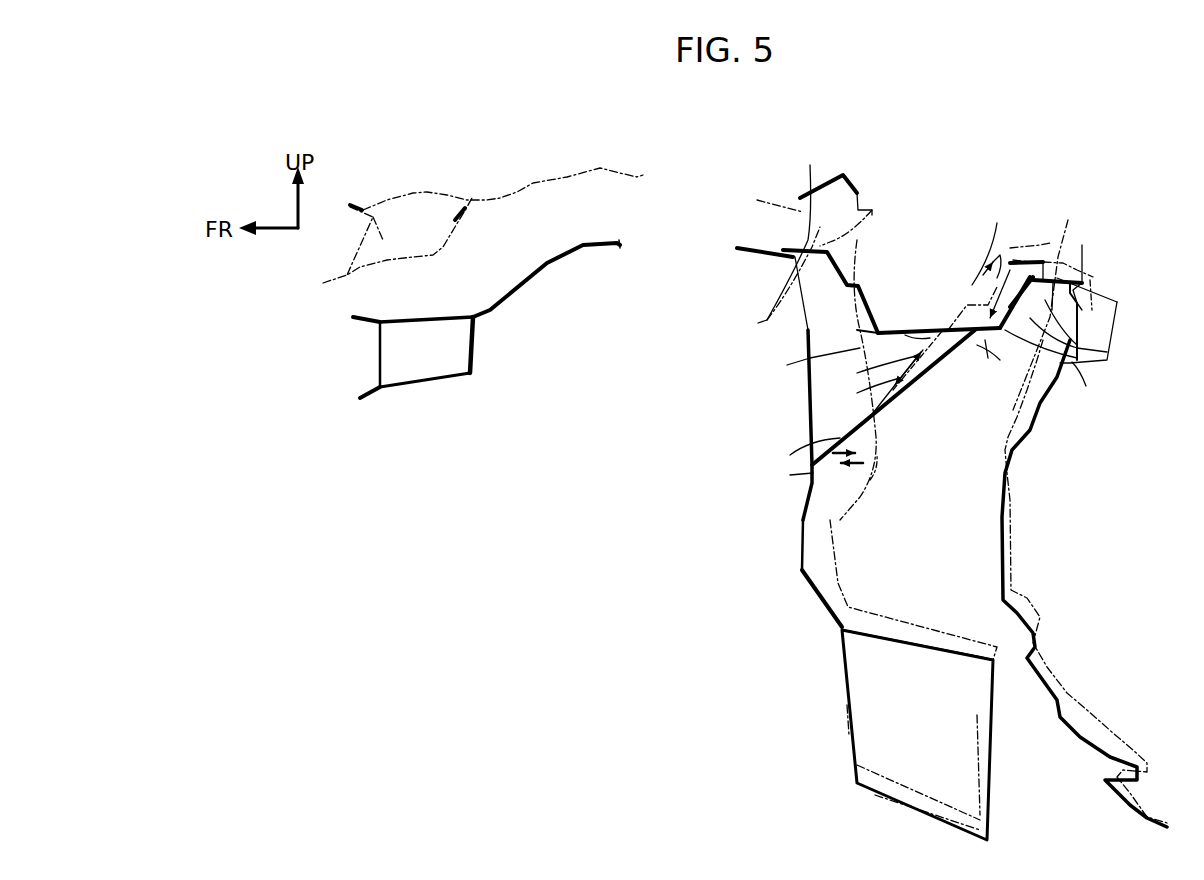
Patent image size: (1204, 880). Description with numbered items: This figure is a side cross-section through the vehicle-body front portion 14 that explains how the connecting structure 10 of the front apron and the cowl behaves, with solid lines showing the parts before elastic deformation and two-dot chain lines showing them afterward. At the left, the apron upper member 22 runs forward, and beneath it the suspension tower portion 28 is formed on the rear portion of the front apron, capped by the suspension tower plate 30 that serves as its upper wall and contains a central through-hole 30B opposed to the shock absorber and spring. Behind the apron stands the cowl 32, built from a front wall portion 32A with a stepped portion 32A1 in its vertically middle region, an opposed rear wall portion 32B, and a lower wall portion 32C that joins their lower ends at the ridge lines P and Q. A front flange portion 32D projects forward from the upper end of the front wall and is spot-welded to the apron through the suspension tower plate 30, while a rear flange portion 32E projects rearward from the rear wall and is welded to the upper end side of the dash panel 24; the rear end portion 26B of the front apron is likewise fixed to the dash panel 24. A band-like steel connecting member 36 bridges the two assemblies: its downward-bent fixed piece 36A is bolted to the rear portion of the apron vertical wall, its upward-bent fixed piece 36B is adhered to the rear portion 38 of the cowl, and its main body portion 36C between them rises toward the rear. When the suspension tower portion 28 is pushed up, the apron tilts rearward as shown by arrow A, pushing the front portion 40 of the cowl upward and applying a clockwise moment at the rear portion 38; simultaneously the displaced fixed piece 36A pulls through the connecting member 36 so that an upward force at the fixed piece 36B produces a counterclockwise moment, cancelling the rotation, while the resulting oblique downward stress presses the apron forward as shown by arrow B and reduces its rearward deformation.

The connecting structure 10 is at (956, 447).
The vehicle-body front portion 14 is at (386, 518).
The apron upper member 22 is at (425, 317).
The dash panel 24 is at (843, 678).
The rear end portion of front apron 26B is at (833, 550).
The suspension tower portion 28 is at (865, 410).
The suspension tower plate 30 is at (546, 258).
The through-hole 30B is at (620, 245).
The cowl 32 is at (884, 312).
The front wall portion 32A is at (865, 293).
The stepped portion 32A1 is at (857, 317).
The rear wall portion 32B is at (1070, 316).
The lower wall portion 32C is at (910, 330).
The front flange portion 32D is at (800, 198).
The rear flange portion 32E is at (1043, 260).
The connecting member 36 is at (873, 410).
The fixed piece 36A is at (870, 480).
The fixed piece 36B is at (907, 360).
The main body portion 36C is at (960, 375).
The rear portion of cowl 38 is at (1095, 352).
The front portion of cowl 40 is at (857, 330).